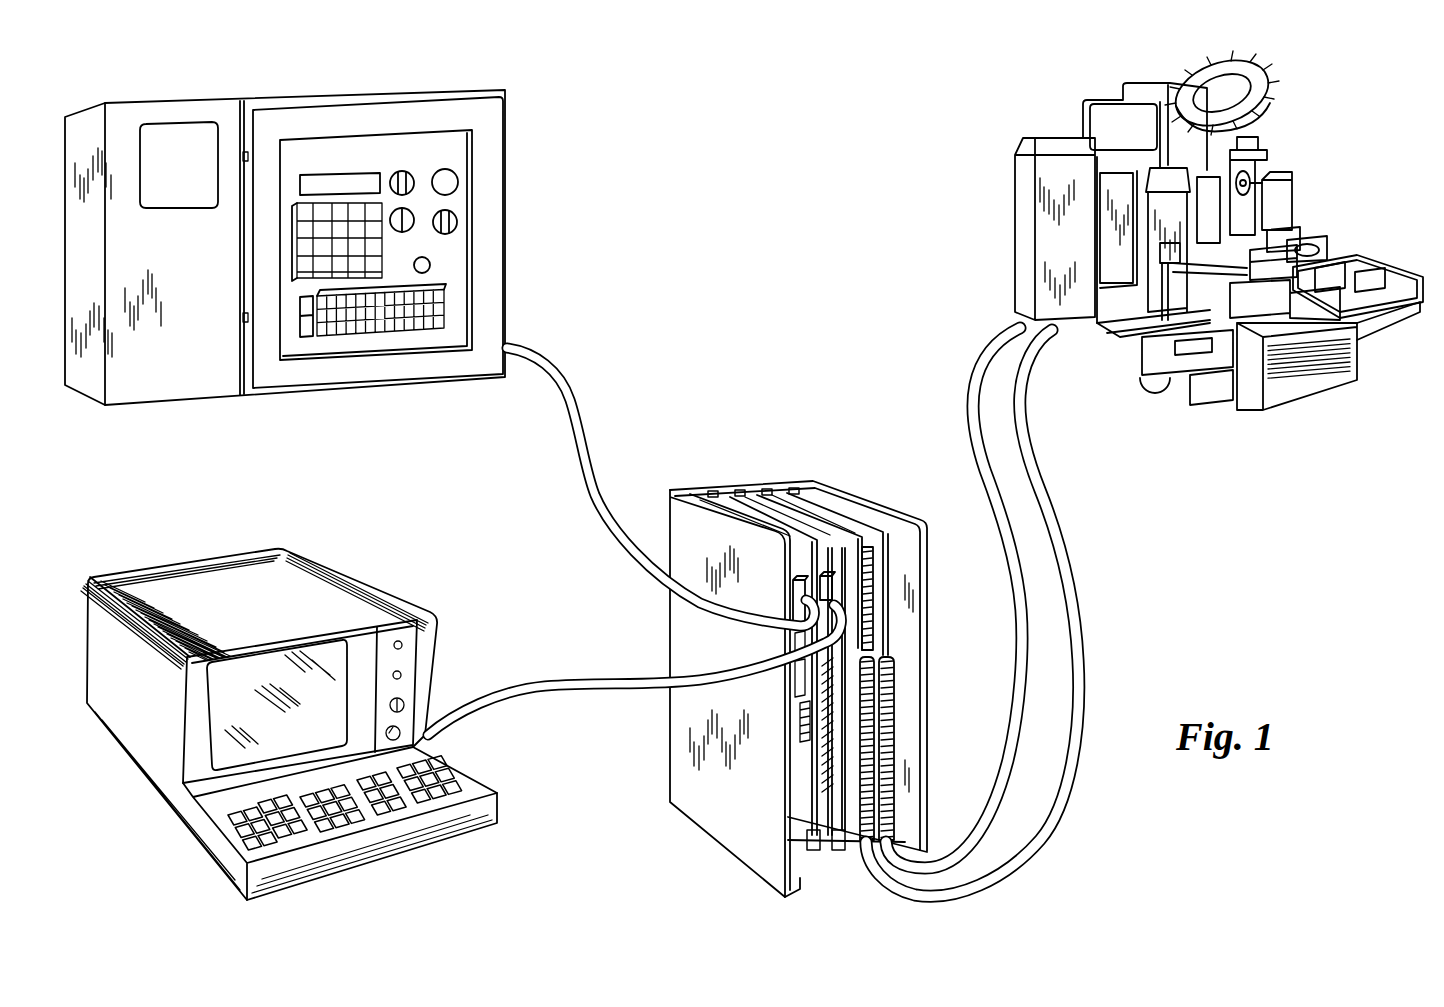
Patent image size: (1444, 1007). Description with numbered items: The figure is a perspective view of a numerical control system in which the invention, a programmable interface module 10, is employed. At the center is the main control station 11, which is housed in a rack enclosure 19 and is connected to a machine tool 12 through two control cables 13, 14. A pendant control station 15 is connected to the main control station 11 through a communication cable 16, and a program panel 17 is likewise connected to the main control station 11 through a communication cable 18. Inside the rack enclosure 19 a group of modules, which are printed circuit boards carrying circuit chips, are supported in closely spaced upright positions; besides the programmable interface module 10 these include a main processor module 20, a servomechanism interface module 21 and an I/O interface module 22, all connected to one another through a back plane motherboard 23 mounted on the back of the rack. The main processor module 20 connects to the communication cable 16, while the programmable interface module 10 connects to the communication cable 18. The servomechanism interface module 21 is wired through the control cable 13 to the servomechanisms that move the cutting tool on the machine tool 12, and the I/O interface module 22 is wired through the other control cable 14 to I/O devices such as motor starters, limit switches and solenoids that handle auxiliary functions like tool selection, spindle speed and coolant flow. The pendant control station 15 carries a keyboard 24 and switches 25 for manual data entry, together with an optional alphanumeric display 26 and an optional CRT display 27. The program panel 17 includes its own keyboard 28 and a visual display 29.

The programmable interface module 10 is at (807, 519).
The main control station 11 is at (778, 448).
The machine tool 12 is at (975, 237).
The control cable 13 is at (1015, 628).
The control cable 14 is at (1080, 630).
The pendant control station 15 is at (311, 91).
The communication cable 16 is at (570, 384).
The program panel 17 is at (330, 566).
The communication cable 18 is at (537, 695).
The rack enclosure 19 is at (733, 858).
The main processor module 20 is at (700, 523).
The servomechanism interface module 21 is at (832, 519).
The I/O interface module 22 is at (870, 519).
The back plane motherboard 23 is at (712, 494).
The keyboard 24 is at (356, 337).
The switches 25 is at (425, 165).
The alphanumeric display 26 is at (347, 180).
The CRT display 27 is at (188, 130).
The keyboard 28 is at (348, 828).
The visual display 29 is at (324, 716).